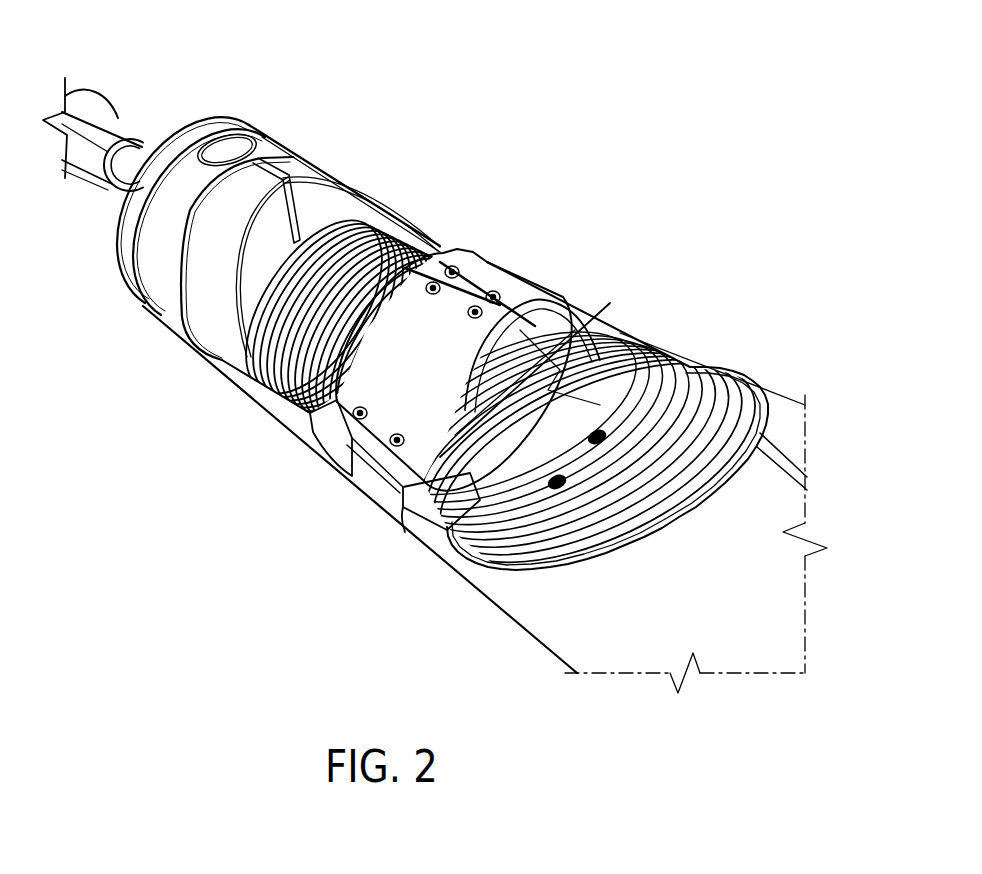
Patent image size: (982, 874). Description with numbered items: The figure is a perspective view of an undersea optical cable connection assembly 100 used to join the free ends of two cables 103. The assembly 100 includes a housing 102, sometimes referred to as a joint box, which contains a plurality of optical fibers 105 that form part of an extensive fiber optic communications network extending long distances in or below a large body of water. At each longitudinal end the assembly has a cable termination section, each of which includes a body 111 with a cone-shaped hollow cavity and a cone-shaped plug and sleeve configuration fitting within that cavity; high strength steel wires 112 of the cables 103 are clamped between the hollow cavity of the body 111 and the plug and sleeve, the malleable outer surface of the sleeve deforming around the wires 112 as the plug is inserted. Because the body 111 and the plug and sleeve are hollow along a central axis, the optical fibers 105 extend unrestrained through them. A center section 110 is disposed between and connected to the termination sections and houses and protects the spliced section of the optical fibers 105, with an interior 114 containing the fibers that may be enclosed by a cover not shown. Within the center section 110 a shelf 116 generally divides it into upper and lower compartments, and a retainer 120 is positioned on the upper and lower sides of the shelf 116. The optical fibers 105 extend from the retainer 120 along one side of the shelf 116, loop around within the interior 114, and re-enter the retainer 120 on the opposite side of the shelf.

The undersea optical cable connection assembly 100 is at (540, 140).
The housing 102 is at (333, 157).
The cables 103 is at (106, 130).
The optical fibers 105 is at (442, 240).
The center section 110 is at (514, 599).
The body 111 is at (267, 143).
The high strength steel wires 112 is at (133, 163).
The interior 114 is at (352, 203).
The shelf 116 is at (567, 375).
The retainer 120 is at (512, 276).